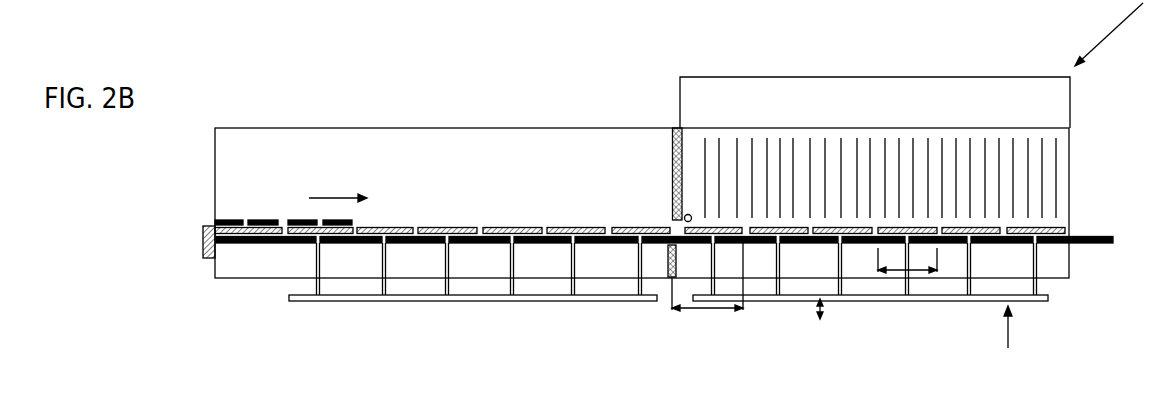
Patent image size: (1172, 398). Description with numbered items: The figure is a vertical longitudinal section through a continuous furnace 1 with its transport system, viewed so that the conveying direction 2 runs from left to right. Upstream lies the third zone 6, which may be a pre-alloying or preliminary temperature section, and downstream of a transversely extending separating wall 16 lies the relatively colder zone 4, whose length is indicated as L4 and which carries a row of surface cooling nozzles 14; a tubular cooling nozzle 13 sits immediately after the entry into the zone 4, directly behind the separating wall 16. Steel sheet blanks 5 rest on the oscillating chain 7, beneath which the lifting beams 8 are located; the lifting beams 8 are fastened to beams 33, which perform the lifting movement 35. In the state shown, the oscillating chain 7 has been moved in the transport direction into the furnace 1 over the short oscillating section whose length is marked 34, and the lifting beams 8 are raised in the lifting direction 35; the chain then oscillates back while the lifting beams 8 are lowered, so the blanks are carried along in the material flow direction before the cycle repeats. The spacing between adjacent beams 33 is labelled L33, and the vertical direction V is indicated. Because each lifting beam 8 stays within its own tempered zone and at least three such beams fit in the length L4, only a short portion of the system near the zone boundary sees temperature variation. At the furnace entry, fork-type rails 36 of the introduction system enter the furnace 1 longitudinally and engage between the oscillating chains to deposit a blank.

The continuous furnace 1 is at (1111, 33).
The conveying direction 2 is at (338, 185).
The zone 4 is at (827, 137).
The steel sheet blank 5 is at (262, 220).
The third zone 6 is at (497, 191).
The oscillating chain 7 is at (233, 245).
The lifting beams 8 is at (372, 244).
The tubular cooling nozzle 13 is at (688, 214).
The surface cooling nozzles 14 is at (753, 153).
The separating wall 16 is at (672, 163).
The beam 33 is at (742, 244).
The length of the oscillating section 34 is at (705, 312).
The lifting movement 35 is at (822, 312).
The fork-type rails 36 is at (203, 246).
The length of zone 4 L4 is at (922, 77).
The spacing of support elements L33 is at (917, 272).
The vertical direction V is at (1016, 329).